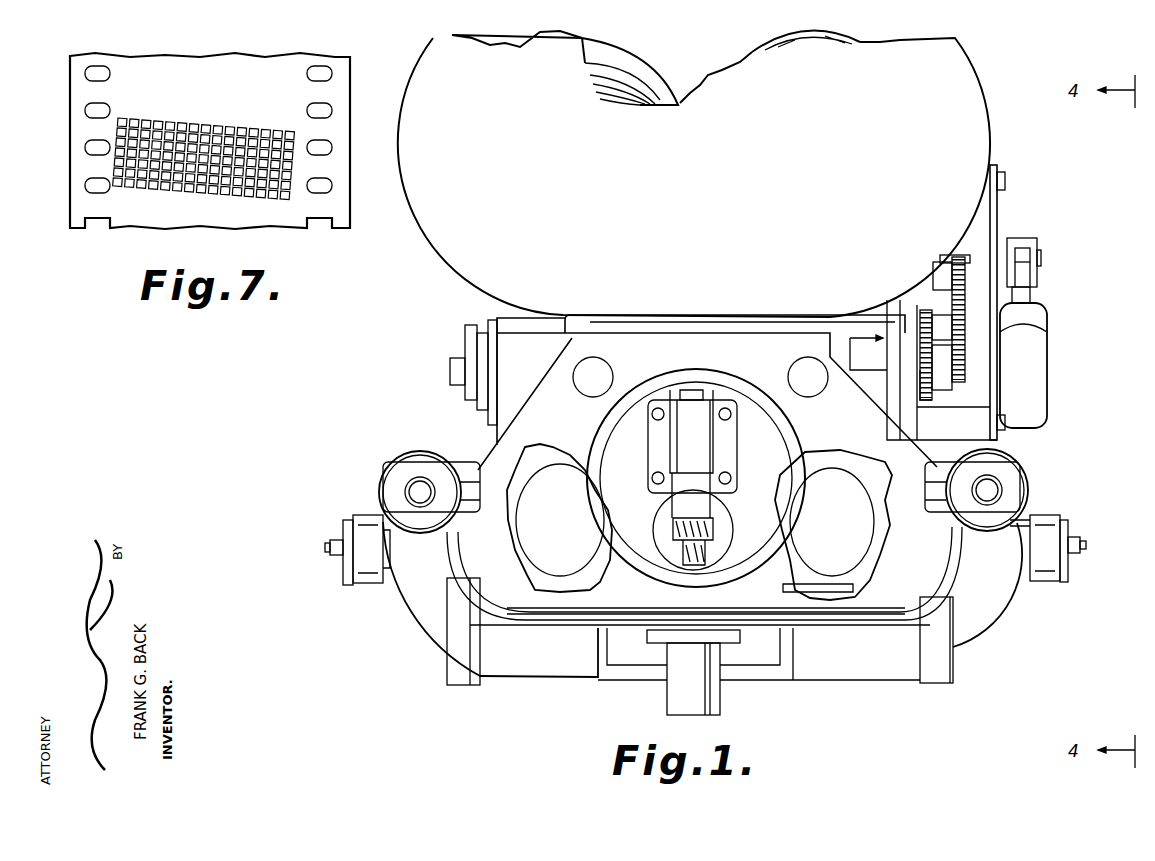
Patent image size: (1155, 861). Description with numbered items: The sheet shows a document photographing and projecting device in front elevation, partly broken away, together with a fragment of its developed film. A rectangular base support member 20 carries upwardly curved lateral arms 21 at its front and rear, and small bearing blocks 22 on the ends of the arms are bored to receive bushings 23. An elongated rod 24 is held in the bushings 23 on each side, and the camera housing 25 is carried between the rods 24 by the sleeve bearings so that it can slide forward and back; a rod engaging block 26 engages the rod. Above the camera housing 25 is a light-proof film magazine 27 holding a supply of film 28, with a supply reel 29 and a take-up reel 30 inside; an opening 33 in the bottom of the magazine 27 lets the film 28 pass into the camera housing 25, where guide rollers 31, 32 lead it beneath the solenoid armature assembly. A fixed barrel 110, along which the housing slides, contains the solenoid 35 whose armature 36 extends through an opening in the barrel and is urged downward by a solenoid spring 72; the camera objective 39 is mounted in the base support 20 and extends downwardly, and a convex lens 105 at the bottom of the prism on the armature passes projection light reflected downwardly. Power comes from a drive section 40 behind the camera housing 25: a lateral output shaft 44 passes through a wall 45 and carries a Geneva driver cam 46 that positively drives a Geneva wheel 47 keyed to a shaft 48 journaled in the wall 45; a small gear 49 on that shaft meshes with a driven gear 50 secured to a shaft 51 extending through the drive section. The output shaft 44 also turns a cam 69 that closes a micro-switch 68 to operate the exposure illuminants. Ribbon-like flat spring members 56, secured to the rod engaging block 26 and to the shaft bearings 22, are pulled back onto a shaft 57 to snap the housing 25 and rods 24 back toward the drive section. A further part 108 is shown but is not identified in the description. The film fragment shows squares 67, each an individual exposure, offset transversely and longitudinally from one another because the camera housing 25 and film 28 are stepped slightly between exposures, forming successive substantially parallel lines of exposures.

In FIG. 1, the base support member 20 is at (785, 683).
In FIG. 1, the lateral arms 21 is at (966, 636).
In FIG. 1, the bearing blocks 22 is at (1012, 486).
In FIG. 1, the bushing 23 is at (986, 486).
In FIG. 1, the elongated rod 24 is at (1000, 492).
In FIG. 1, the camera housing 25 is at (845, 418).
In FIG. 1, the rod engaging block 26 is at (466, 470).
In FIG. 1, the film magazine 27 is at (975, 90).
In FIG. 7, the film 28 is at (342, 212).
In FIG. 1, the film 28 is at (850, 44).
In FIG. 1, the supply reel 29 is at (775, 45).
In FIG. 1, the take-up reel 30 is at (640, 60).
In FIG. 1, the guide roller 31 is at (862, 516).
In FIG. 1, the guide roller 32 is at (563, 523).
In FIG. 1, the opening 33 is at (728, 316).
In FIG. 1, the solenoid 35 is at (681, 400).
In FIG. 1, the armature 36 is at (678, 525).
In FIG. 1, the camera objective 39 is at (680, 698).
In FIG. 1, the drive section 40 is at (1005, 170).
In FIG. 1, the output shaft 44 is at (1005, 245).
In FIG. 1, the wall 45 is at (912, 306).
In FIG. 1, the Geneva driver cam 46 is at (949, 276).
In FIG. 1, the Geneva wheel 47 is at (960, 361).
In FIG. 1, the shaft 48 is at (937, 323).
In FIG. 1, the small gear 49 is at (927, 310).
In FIG. 1, the driven gear 50 is at (940, 355).
In FIG. 1, the shaft 51 is at (925, 378).
In FIG. 1, the flat spring members 56 is at (1063, 525).
In FIG. 1, the shaft 57 is at (1082, 546).
In FIG. 7, the squares 67 is at (218, 131).
In FIG. 1, the micro-switch 68 is at (1047, 356).
In FIG. 1, the cam 69 is at (1040, 252).
In FIG. 1, the solenoid spring 72 is at (708, 392).
In FIG. 1, the convex lens 105 is at (710, 553).
In FIG. 1, the mounting plate 108 is at (672, 460).
In FIG. 1, the fixed barrel 110 is at (603, 421).